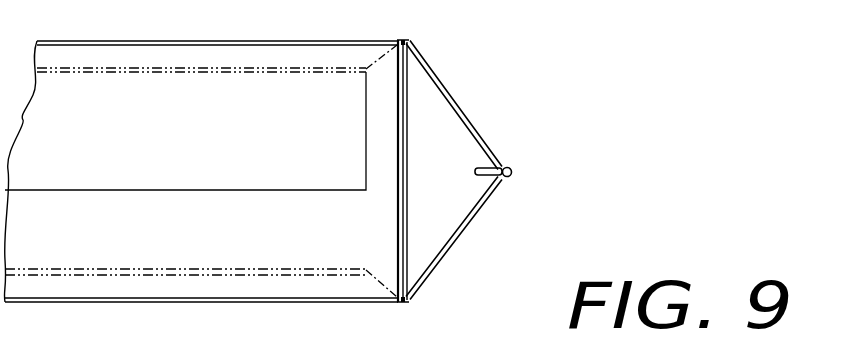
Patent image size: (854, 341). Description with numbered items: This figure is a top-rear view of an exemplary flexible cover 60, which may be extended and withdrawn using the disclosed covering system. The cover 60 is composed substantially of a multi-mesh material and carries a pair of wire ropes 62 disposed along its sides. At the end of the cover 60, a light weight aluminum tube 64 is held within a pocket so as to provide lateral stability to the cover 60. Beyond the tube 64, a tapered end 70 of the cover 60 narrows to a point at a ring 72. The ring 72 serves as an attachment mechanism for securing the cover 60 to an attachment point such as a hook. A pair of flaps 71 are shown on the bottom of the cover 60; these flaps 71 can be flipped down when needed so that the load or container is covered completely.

The flexible cover 60 is at (153, 112).
The wire ropes 62 is at (78, 43).
The light weight aluminum tube 64 is at (408, 133).
The tapered end 70 is at (488, 145).
The flaps 71 is at (275, 68).
The ring 72 is at (497, 176).